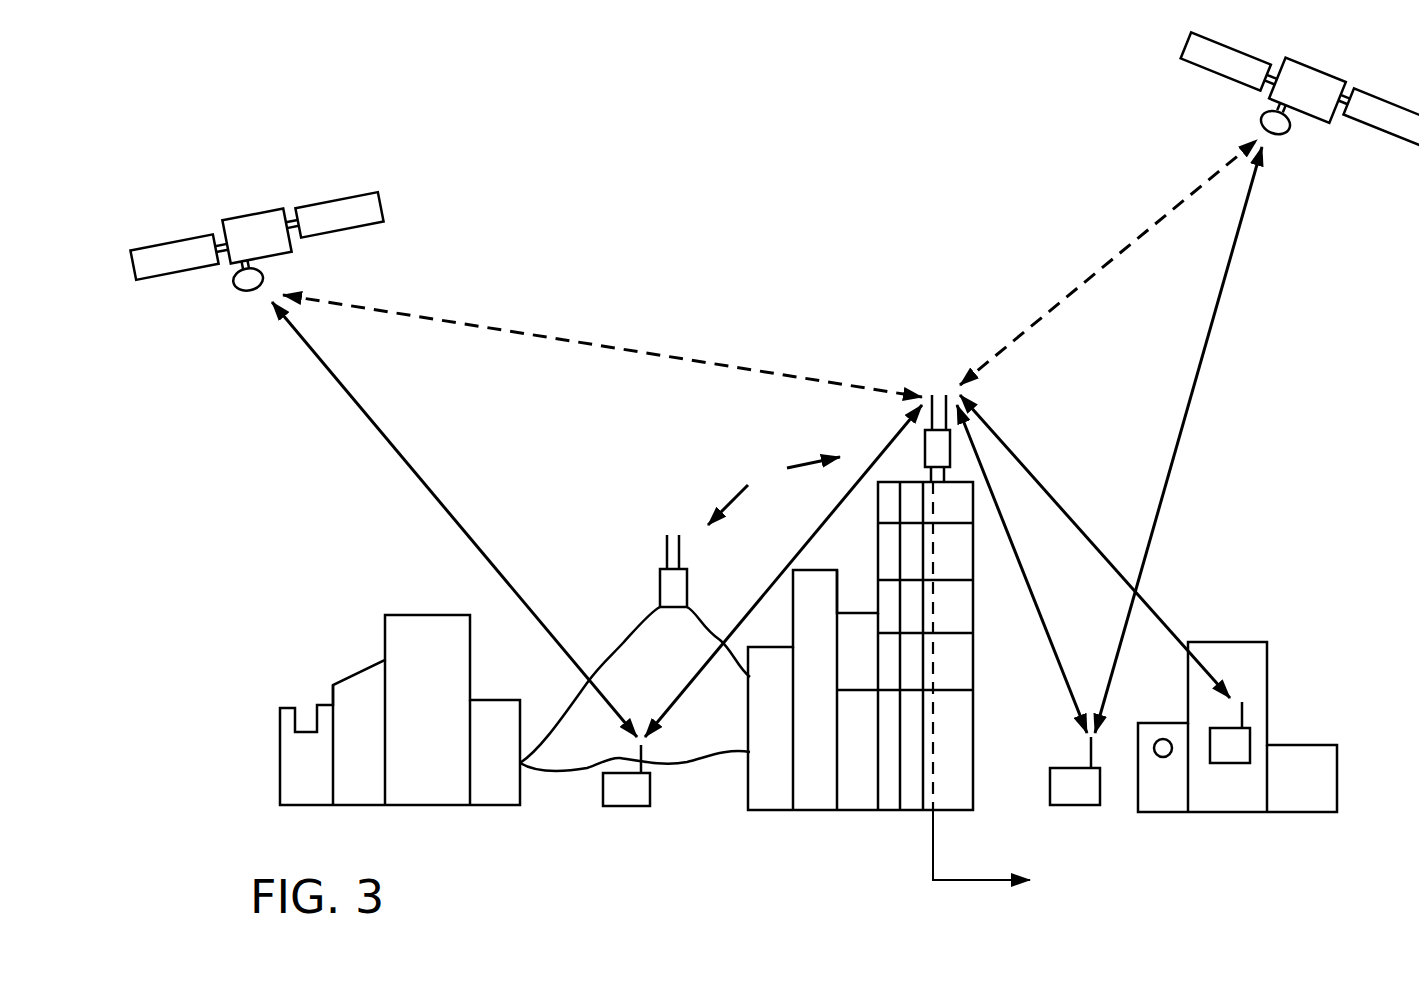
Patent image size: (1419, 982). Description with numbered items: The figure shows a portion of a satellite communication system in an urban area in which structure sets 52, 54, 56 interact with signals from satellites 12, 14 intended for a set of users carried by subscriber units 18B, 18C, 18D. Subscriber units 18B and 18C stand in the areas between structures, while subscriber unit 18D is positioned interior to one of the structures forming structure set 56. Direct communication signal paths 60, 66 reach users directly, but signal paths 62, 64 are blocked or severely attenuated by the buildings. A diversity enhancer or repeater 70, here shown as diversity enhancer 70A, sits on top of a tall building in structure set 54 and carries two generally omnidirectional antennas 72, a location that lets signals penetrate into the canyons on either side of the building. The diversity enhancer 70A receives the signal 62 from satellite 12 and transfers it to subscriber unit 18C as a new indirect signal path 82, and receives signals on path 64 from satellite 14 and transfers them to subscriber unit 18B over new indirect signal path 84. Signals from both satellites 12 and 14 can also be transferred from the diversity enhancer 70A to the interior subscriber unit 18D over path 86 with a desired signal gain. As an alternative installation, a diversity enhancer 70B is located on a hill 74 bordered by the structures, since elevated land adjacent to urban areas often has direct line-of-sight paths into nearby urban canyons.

The satellite 12 is at (287, 208).
The satellite 14 is at (1345, 82).
The subscriber unit 18B is at (627, 807).
The subscriber unit 18C is at (1068, 807).
The subscriber unit 18D is at (1250, 732).
The structure set 52 is at (422, 807).
The structure set 54 is at (800, 812).
The structure set 56 is at (1223, 813).
The direct communication signal path 60 is at (403, 460).
The blocked signal path 62 is at (697, 365).
The blocked signal path 64 is at (1057, 307).
The direct communication signal path 66 is at (1195, 375).
The diversity enhancer 70 is at (774, 491).
The diversity enhancer 70A is at (925, 457).
The diversity enhancer 70B is at (660, 582).
The omnidirectional antennas 72 is at (938, 403).
The hill 74 is at (623, 643).
The indirect signal path 82 is at (1049, 648).
The indirect signal path 84 is at (750, 610).
The signal path 86 is at (1068, 515).